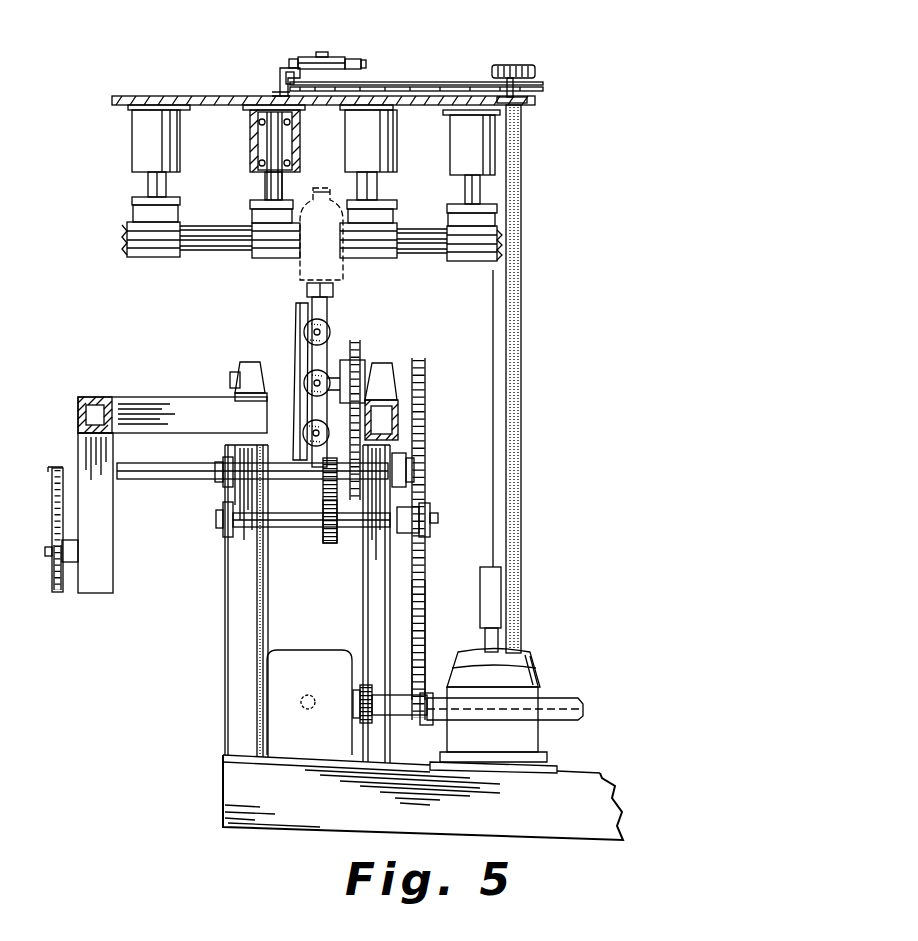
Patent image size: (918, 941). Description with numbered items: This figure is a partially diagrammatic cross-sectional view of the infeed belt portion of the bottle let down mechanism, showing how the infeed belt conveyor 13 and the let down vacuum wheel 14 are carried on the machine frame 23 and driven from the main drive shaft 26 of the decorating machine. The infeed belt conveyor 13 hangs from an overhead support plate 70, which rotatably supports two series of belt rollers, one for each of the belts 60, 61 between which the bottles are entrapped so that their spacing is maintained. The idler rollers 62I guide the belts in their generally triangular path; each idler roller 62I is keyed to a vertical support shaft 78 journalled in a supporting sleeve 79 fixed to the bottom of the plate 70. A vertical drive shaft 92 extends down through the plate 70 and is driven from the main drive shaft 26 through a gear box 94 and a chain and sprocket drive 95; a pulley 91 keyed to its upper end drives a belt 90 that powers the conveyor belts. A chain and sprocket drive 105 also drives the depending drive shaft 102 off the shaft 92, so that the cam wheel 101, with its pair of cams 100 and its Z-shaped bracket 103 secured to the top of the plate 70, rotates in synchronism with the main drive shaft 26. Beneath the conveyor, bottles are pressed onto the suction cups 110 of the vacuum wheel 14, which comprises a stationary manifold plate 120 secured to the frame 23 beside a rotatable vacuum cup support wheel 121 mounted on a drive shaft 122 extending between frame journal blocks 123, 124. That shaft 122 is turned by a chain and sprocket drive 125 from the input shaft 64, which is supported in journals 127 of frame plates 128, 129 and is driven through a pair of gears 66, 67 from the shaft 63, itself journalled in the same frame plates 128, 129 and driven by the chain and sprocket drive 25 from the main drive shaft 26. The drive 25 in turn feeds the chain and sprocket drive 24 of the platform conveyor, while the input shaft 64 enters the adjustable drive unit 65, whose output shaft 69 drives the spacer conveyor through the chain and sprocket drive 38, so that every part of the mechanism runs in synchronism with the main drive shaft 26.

The infeed belt conveyor 13 is at (125, 272).
The let down vacuum wheel 14 is at (329, 309).
The machine frame 23 is at (236, 609).
The chain and sprocket drive 24 is at (421, 386).
The chain and sprocket drive 25 is at (428, 597).
The main drive shaft 26 is at (573, 706).
The chain and sprocket drive 38 is at (55, 468).
The belt 60 is at (415, 263).
The belt 61 is at (212, 262).
The idler rollers 62I is at (263, 262).
The shaft 63 is at (352, 530).
The input shaft 64 is at (196, 482).
The adjustable drive unit 65 is at (100, 584).
The gear 66 is at (324, 536).
The gear 67 is at (322, 484).
The output shaft 69 is at (54, 586).
The overhead support plate 70 is at (220, 96).
The vertical support shaft 78 is at (266, 188).
The supporting sleeve 79 is at (365, 148).
The belt 90 is at (545, 70).
The pulley 91 is at (516, 66).
The drive shaft 92 is at (524, 170).
The gear box 94 is at (530, 660).
The chain and sprocket drive 95 is at (360, 720).
The cams 100 is at (292, 58).
The cam wheel 101 is at (350, 57).
The depending drive shaft 102 is at (322, 52).
The Z-shaped bracket 103 is at (283, 77).
The chain and sprocket drive 105 is at (425, 82).
The suction cups 110 is at (336, 287).
The stationary manifold plate 120 is at (296, 342).
The vacuum cup support wheel 121 is at (332, 321).
The drive shaft 122 is at (230, 378).
The frame journal block 123 is at (392, 381).
The frame journal block 124 is at (250, 362).
The chain and sprocket drive 125 is at (364, 342).
The journals 127 is at (237, 460).
The frame plate 128 is at (233, 540).
The frame plate 129 is at (392, 548).